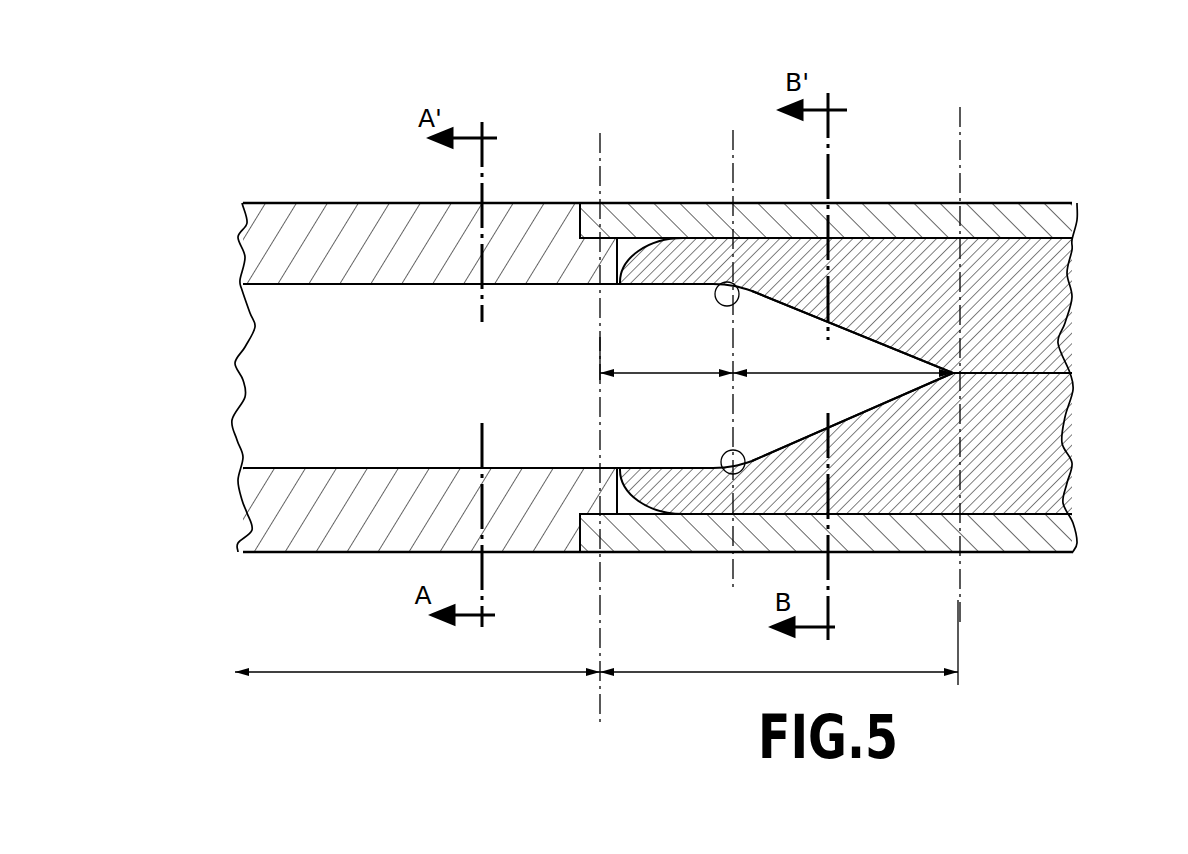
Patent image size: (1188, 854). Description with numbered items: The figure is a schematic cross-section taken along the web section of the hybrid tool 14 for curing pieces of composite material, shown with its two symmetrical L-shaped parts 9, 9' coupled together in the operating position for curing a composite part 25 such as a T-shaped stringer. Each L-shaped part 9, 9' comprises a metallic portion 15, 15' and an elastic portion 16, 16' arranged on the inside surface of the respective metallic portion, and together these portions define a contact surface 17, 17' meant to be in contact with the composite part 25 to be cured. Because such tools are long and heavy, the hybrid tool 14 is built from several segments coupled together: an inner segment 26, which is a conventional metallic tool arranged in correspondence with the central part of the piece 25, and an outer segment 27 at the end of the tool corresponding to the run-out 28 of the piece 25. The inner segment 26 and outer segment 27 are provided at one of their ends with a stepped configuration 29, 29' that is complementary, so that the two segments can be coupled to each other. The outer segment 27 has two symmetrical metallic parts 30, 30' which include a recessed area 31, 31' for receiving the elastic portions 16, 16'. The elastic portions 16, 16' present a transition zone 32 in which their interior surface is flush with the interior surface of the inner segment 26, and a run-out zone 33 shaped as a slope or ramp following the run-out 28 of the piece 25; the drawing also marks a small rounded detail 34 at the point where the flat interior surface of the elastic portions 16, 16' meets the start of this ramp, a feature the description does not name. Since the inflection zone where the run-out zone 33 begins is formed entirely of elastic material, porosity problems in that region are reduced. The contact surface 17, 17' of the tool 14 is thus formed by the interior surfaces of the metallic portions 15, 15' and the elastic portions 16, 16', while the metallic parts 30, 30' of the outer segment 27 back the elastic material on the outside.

The first L-shaped part 9 is at (1006, 680).
The second L-shaped part 9' is at (363, 99).
The hybrid tool 14 is at (600, 444).
The metallic portion 15 is at (371, 535).
The metallic portion 15' is at (373, 237).
The elastic portion 16 is at (901, 460).
The elastic portion 16' is at (896, 305).
The contact surface 17 is at (553, 599).
The contact surface 17' is at (571, 163).
The composite part 25 is at (280, 358).
The inner segment 26 is at (417, 657).
The outer segment 27 is at (779, 642).
The run-out 28 is at (773, 322).
The stepped configuration 29 is at (638, 599).
The stepped configuration 29' is at (650, 163).
The metallic part 30 is at (657, 158).
The metallic part 30' is at (689, 623).
The recessed area 31 is at (877, 171).
The recessed area 31' is at (872, 556).
The transition zone 32 is at (666, 357).
The run-out zone 33 is at (843, 355).
The rounded transition 34 is at (713, 292).